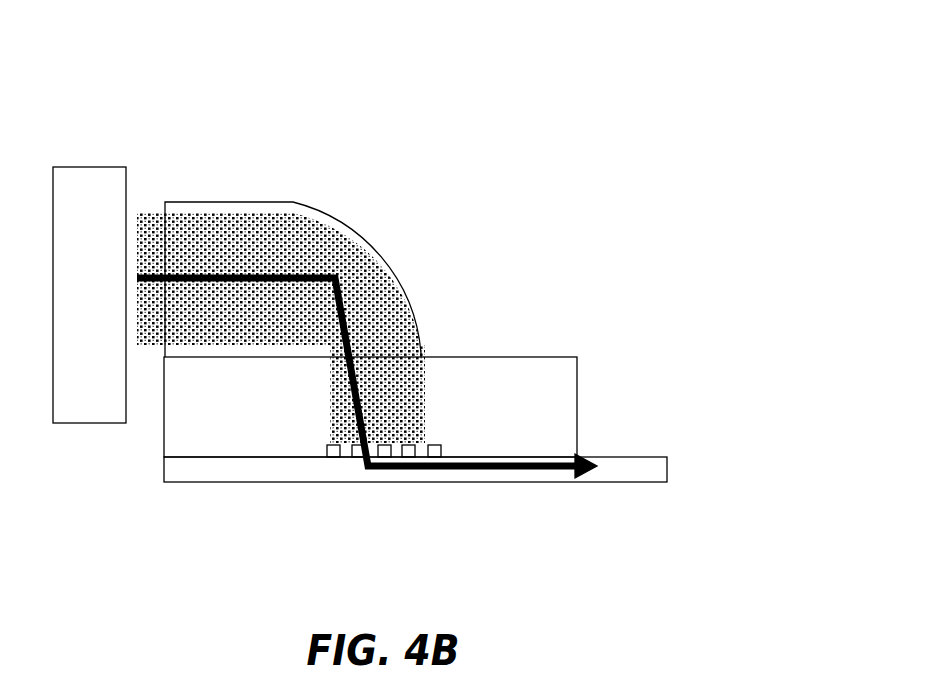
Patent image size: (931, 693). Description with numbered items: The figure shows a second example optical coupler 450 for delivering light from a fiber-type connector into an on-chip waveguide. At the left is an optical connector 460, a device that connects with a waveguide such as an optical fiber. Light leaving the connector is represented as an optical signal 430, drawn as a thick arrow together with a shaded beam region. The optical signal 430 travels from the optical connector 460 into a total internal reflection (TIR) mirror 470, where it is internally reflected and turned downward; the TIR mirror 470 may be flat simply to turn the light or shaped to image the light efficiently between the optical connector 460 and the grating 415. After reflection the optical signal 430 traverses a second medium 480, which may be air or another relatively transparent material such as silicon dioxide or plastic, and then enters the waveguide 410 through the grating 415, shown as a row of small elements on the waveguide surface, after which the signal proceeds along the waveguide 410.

The second example optical coupler 450 is at (276, 77).
The optical connector 460 is at (126, 193).
The total internal reflection (TIR) mirror 470 is at (402, 275).
The optical signal 430 is at (366, 401).
The second medium 480 is at (577, 402).
The waveguide 410 is at (667, 468).
The grating 415 is at (467, 447).